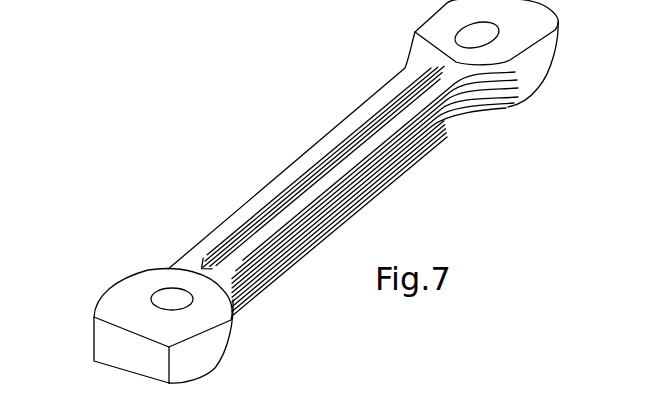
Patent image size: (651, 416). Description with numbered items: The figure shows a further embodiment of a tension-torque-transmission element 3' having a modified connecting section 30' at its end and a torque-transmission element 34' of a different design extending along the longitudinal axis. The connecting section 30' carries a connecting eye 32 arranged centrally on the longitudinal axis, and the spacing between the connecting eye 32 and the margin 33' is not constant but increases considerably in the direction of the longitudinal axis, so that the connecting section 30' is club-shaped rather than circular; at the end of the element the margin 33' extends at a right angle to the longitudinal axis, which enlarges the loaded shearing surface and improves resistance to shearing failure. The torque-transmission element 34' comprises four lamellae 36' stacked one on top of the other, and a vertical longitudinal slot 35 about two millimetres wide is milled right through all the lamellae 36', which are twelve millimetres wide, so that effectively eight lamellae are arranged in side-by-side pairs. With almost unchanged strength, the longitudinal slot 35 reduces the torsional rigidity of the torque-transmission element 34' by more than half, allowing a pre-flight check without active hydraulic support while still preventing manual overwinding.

The connecting section 30' is at (294, 191).
The connecting eye 32 is at (170, 288).
The margin 33' is at (187, 326).
The tension-torque-transmission element 3' is at (343, 174).
The torque-transmission element 34' is at (291, 150).
The longitudinal slot 35 is at (333, 160).
The lamellae 36' is at (375, 194).